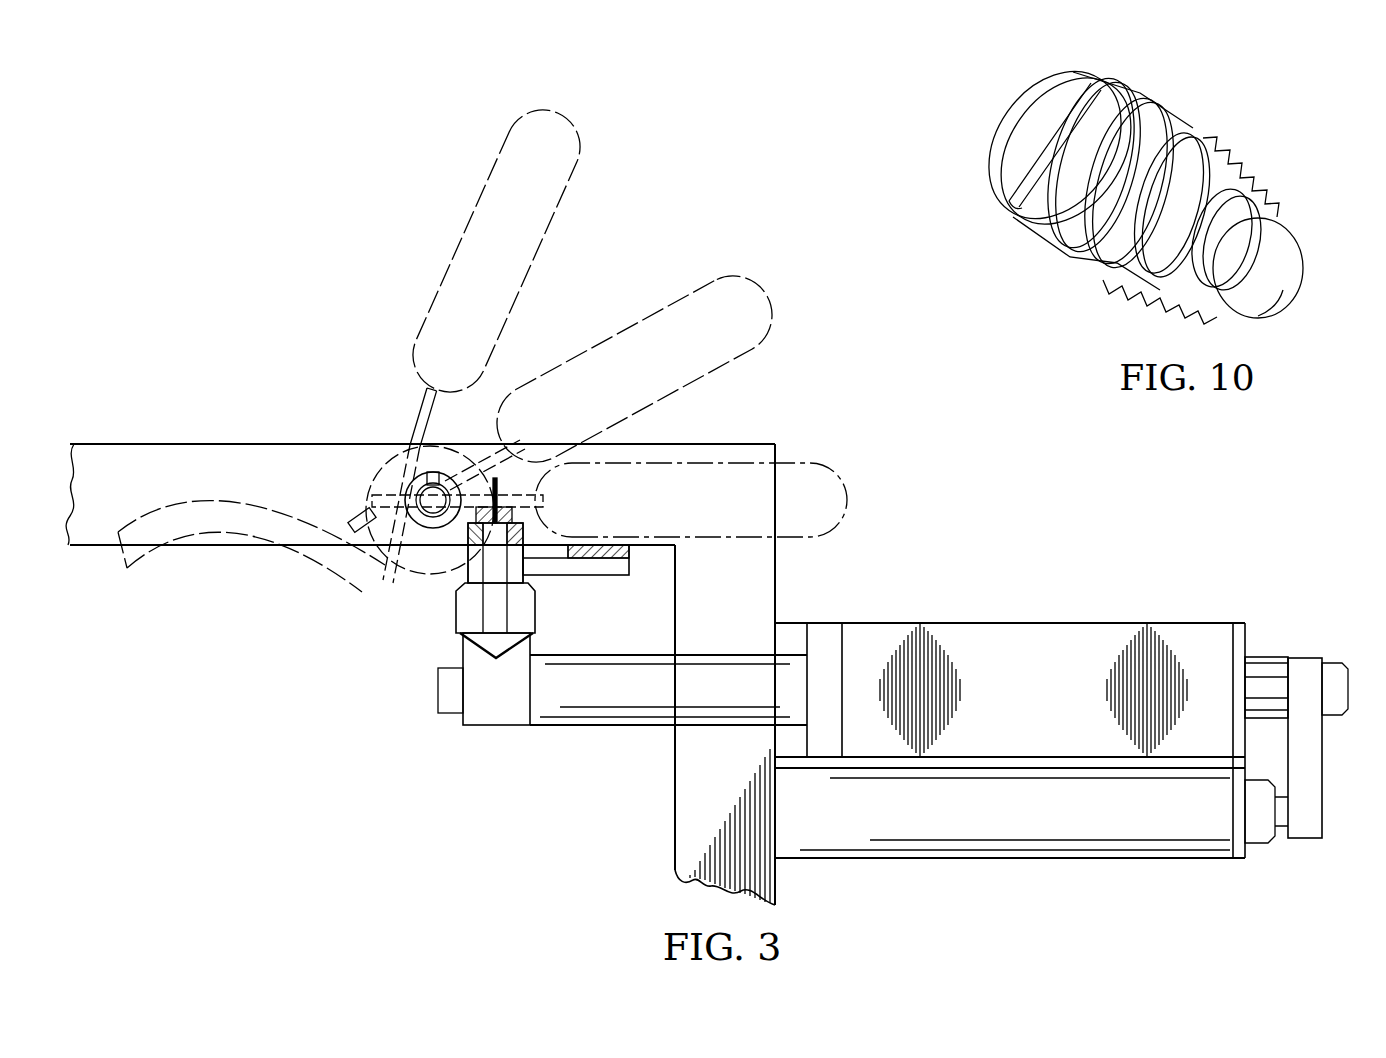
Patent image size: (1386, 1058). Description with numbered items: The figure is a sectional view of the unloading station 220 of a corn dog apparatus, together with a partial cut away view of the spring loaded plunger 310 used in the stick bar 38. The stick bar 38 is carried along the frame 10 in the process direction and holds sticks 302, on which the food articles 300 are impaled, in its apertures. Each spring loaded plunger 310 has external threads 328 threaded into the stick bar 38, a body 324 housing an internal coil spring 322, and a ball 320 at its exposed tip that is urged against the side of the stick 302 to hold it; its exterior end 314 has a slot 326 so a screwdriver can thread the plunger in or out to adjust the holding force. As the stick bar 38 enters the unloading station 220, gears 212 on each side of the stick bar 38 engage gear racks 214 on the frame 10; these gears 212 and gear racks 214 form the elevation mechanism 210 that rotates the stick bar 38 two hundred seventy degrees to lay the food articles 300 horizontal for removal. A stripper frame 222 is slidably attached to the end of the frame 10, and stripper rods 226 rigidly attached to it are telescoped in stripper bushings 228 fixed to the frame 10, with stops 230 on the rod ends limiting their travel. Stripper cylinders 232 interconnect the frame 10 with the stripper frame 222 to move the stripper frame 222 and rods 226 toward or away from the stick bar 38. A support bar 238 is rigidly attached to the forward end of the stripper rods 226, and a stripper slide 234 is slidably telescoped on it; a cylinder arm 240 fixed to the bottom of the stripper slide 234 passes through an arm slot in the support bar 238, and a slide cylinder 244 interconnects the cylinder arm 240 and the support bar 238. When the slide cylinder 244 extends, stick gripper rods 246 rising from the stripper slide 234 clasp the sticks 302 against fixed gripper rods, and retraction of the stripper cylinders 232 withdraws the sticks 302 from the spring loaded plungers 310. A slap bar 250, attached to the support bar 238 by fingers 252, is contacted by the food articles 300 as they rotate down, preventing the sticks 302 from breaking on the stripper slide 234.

In FIG. 3, the frame 10 is at (674, 820).
In FIG. 3, the stick bar 38 is at (369, 515).
In FIG. 3, the elevation mechanism 210 is at (302, 590).
In FIG. 3, the gears 212 is at (428, 586).
In FIG. 3, the gear racks 214 is at (161, 557).
In FIG. 3, the unloading station 220 is at (770, 407).
In FIG. 3, the stripper frame 222 is at (1303, 840).
In FIG. 3, the stripper rods 226 is at (608, 727).
In FIG. 3, the stripper bushings 228 is at (1012, 705).
In FIG. 3, the stops 230 is at (1264, 658).
In FIG. 3, the stripper cylinders 232 is at (1010, 860).
In FIG. 3, the stripper slide 234 is at (545, 511).
In FIG. 3, the support bar 238 is at (547, 537).
In FIG. 3, the cylinder arm 240 is at (500, 598).
In FIG. 3, the slide cylinder 244 is at (460, 620).
In FIG. 3, the stick gripper rods 246 is at (528, 448).
In FIG. 3, the slap bar 250 is at (630, 557).
In FIG. 3, the fingers 252 is at (558, 565).
In FIG. 3, the food articles 300 is at (490, 192).
In FIG. 3, the sticks 302 is at (418, 416).
In FIG. 3, the spring loaded plunger 310 is at (408, 472).
In FIG. 10, the spring loaded plunger 310 is at (1146, 185).
In FIG. 10, the exterior end 314 is at (998, 168).
In FIG. 10, the ball 320 is at (1298, 280).
In FIG. 10, the internal coil spring 322 is at (1283, 242).
In FIG. 10, the body 324 is at (1030, 225).
In FIG. 10, the slot 326 is at (1038, 142).
In FIG. 10, the external threads 328 is at (1143, 121).